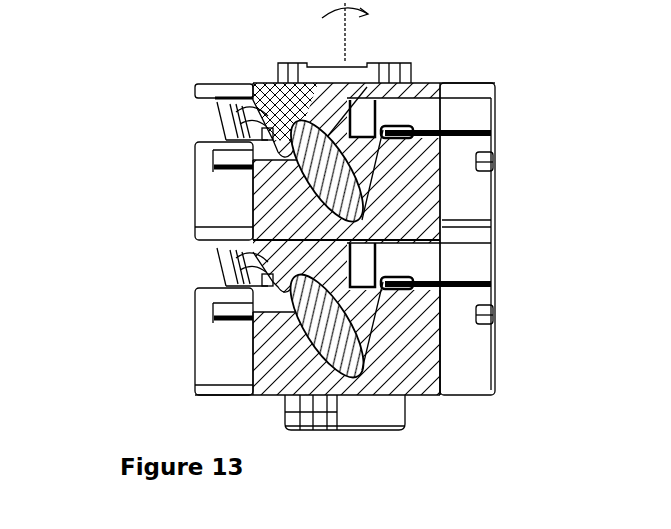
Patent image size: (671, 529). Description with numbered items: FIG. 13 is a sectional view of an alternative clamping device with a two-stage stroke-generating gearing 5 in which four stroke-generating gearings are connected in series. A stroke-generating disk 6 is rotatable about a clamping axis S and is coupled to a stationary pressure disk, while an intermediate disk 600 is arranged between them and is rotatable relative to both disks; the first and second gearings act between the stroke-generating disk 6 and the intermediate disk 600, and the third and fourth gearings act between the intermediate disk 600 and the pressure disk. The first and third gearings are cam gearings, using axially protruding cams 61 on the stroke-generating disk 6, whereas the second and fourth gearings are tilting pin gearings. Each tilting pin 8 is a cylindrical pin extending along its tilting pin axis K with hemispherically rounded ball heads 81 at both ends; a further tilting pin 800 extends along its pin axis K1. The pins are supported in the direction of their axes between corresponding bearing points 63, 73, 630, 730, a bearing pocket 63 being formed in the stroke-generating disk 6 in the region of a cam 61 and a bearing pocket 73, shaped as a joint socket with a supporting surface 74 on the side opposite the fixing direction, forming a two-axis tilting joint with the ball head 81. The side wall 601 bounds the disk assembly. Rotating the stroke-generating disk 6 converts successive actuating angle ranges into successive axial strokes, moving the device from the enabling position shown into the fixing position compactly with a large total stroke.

The clamping axis S is at (343, 41).
The stroke-generating gearing 5 is at (640, 111).
The stroke-generating disk 6 is at (417, 92).
The tilting pin 8 is at (457, 279).
The cam 61 is at (310, 117).
The bearing pocket 63 is at (252, 95).
The bearing pocket 73 is at (342, 378).
The supporting surface 74 is at (268, 372).
The ball head 81 is at (400, 405).
The intermediate disk 600 is at (420, 187).
The housing side wall 601 is at (275, 257).
The bearing point 630 is at (253, 270).
The bearing point 730 is at (345, 219).
The tilting pin 800 is at (407, 130).
The tilting pin axis K is at (300, 368).
The pin axis K1 is at (366, 90).